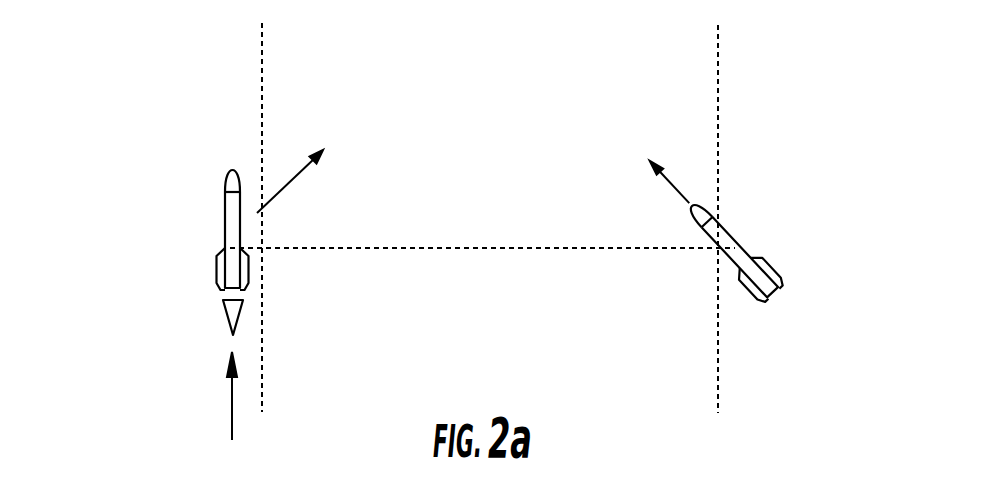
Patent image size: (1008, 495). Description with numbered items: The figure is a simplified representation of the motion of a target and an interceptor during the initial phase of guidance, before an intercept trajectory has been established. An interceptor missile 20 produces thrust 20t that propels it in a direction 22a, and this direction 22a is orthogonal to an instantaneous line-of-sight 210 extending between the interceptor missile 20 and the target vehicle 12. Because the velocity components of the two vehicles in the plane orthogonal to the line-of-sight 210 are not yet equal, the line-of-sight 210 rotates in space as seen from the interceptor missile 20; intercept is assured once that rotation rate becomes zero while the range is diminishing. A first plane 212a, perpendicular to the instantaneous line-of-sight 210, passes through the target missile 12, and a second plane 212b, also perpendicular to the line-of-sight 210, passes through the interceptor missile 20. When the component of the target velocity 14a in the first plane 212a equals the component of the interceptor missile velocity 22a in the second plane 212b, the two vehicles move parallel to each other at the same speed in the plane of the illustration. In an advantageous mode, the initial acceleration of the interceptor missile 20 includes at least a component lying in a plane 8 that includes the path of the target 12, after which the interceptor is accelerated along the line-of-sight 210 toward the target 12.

The plane including the path of the target 8 is at (815, 370).
The target vehicle 12 is at (727, 230).
The target velocity 14a is at (677, 187).
The interceptor missile 20 is at (215, 272).
The thrust 20t is at (221, 311).
The interceptor missile velocity 22a is at (297, 177).
The line-of-sight 210 is at (610, 252).
The first plane 212a is at (718, 52).
The second plane 212b is at (263, 80).